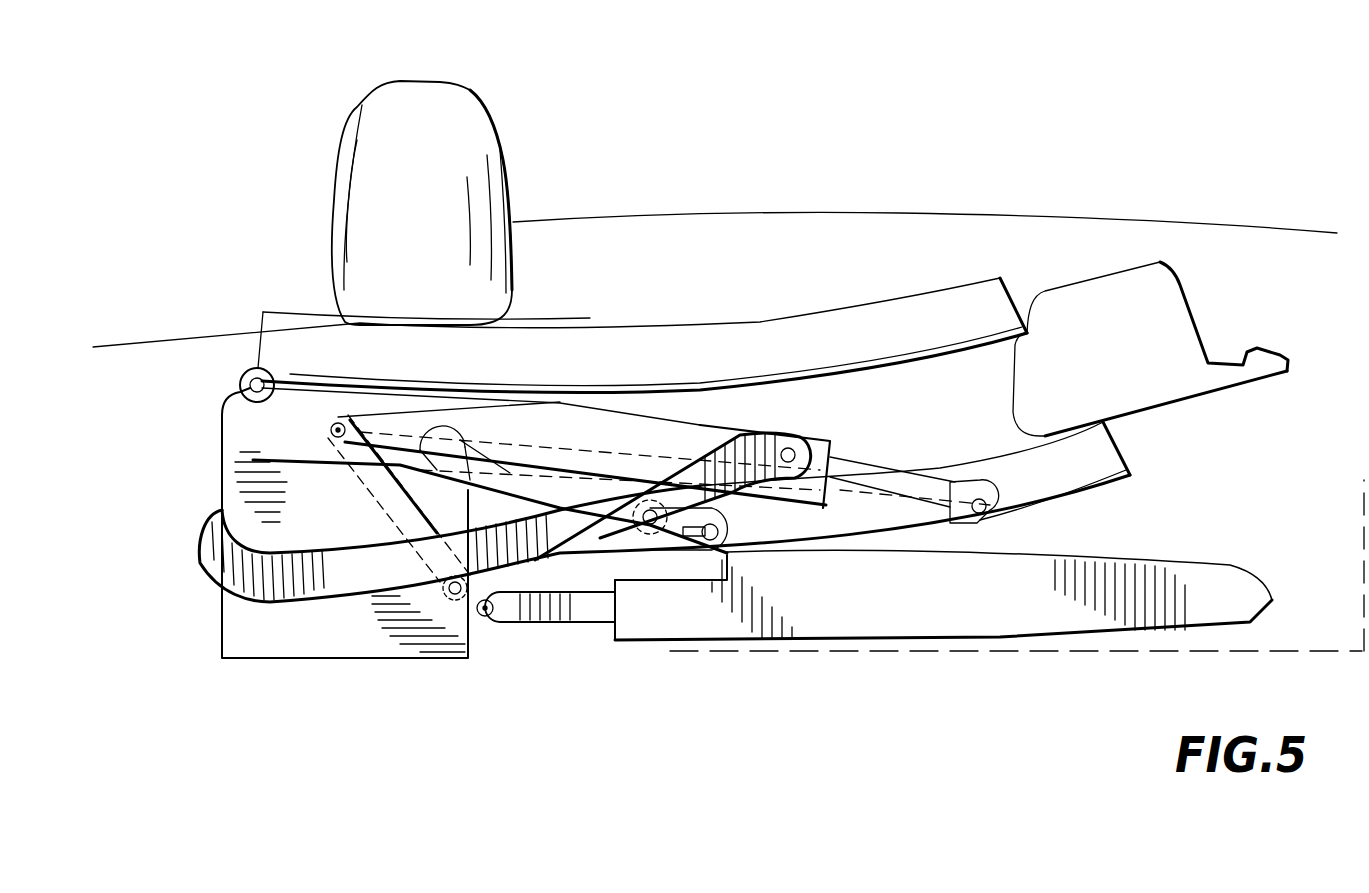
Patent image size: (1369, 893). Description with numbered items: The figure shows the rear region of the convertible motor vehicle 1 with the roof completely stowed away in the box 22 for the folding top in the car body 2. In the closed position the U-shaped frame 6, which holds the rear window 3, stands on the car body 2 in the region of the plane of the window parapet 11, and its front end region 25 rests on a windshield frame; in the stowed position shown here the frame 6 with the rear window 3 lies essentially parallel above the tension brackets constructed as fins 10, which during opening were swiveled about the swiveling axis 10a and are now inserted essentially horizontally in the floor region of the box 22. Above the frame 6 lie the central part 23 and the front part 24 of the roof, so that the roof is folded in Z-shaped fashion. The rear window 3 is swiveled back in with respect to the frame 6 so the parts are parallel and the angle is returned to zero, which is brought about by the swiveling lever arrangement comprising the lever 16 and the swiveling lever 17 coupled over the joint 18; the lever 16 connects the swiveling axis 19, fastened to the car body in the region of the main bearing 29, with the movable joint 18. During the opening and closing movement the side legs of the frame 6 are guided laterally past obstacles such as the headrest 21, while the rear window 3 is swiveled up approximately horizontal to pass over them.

The motor vehicle 1 is at (815, 118).
The car body 2 is at (125, 619).
The rear window 3 is at (908, 518).
The U-shaped frame 6 is at (805, 515).
The tension brackets (fins) 10 is at (1153, 587).
The swiveling axis 10a is at (492, 620).
The window parapet 11 is at (850, 206).
The lever 16 is at (412, 448).
The swiveling lever 17 is at (400, 458).
The joint 18 is at (330, 431).
The swiveling axis 19 is at (488, 618).
The headrest 21 is at (476, 178).
The box for the folding top 22 is at (1312, 503).
The central part of the roof 23 is at (658, 439).
The front part of the roof 24 is at (857, 333).
The front end region of the frame 25 is at (1083, 317).
The main bearing 29 is at (290, 635).